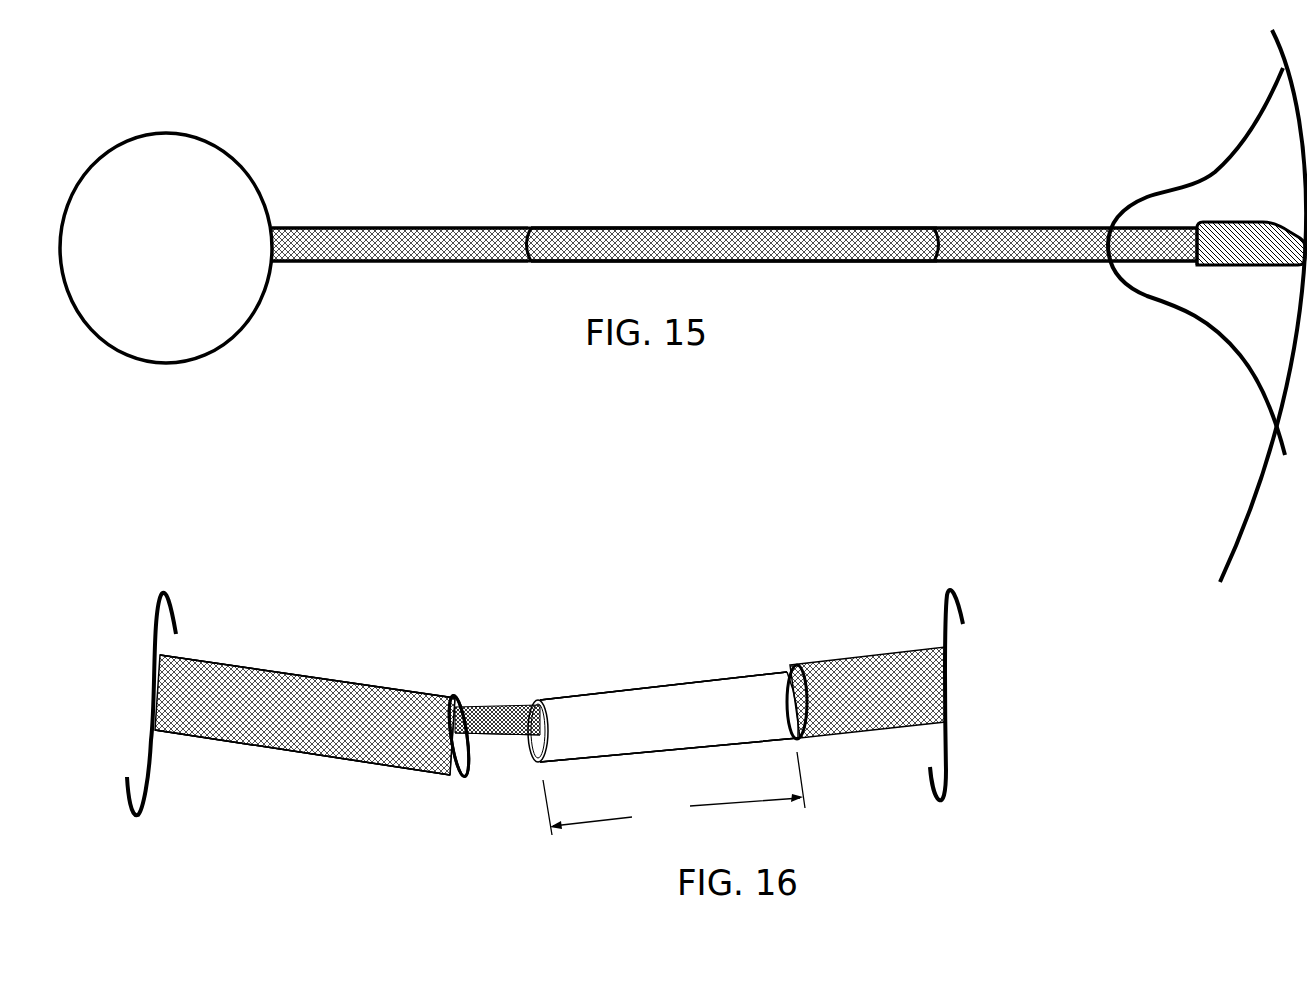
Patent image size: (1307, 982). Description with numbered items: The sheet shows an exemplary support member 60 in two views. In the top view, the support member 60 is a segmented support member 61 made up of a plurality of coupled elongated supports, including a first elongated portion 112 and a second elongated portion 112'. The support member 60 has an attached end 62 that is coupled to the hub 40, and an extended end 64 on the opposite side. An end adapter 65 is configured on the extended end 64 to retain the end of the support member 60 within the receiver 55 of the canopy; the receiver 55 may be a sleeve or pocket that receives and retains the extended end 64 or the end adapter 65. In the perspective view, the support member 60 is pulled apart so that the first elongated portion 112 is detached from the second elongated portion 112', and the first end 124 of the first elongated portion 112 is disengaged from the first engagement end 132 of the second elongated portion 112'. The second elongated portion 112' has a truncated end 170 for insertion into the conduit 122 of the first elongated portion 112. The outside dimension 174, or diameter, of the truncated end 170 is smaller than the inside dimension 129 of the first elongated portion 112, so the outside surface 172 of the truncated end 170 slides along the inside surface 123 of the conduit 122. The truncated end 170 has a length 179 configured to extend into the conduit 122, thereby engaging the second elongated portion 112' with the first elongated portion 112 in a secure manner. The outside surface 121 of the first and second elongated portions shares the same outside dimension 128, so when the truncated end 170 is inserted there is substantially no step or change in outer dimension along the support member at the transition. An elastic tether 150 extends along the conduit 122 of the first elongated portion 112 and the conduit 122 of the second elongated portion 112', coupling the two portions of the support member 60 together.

In FIG. 15, the hub 40 is at (226, 147).
In FIG. 15, the attached end 62 is at (282, 265).
In FIG. 15, the first elongated portion 112 is at (401, 192).
In FIG. 16, the first elongated portion 112 is at (305, 678).
In FIG. 15, the second elongated portion 112' is at (735, 191).
In FIG. 16, the second elongated portion 112' is at (867, 647).
In FIG. 15, the segmented support member 61 is at (842, 243).
In FIG. 15, the support member 60 is at (1103, 200).
In FIG. 16, the support member 60 is at (706, 632).
In FIG. 15, the receiver 55 is at (1137, 292).
In FIG. 15, the extended end 64 is at (1194, 267).
In FIG. 15, the end adapter 65 is at (1277, 267).
In FIG. 16, the outside surface 121 is at (307, 740).
In FIG. 16, the outside dimension 128 is at (233, 792).
In FIG. 16, the first end 124 is at (468, 705).
In FIG. 16, the inside dimension 129 is at (466, 676).
In FIG. 16, the elastic tether 150 is at (507, 710).
In FIG. 16, the first engagement end 132 is at (528, 697).
In FIG. 16, the truncated end 170 is at (592, 705).
In FIG. 16, the outside surface 172 is at (648, 702).
In FIG. 16, the outside dimension 174 is at (775, 783).
In FIG. 16, the inside surface 123 is at (465, 735).
In FIG. 16, the conduit 122 is at (528, 768).
In FIG. 16, the length 179 is at (674, 793).